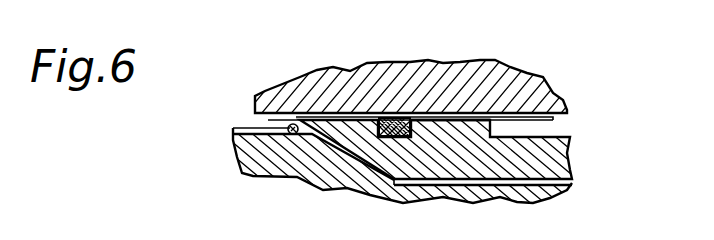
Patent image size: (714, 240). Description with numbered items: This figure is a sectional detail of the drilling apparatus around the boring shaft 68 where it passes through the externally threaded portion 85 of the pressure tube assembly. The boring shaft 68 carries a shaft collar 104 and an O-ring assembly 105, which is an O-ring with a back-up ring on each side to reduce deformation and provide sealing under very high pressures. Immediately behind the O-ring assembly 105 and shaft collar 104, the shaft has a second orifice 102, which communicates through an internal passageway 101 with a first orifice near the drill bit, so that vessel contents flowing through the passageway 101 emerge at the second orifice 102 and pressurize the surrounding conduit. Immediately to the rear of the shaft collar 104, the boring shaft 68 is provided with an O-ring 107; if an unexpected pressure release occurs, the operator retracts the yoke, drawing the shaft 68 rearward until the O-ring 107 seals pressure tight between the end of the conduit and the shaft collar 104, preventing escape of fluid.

The externally threaded portion 85 is at (507, 73).
The boring shaft 68 is at (553, 143).
The passageway 101 is at (563, 185).
The second orifice 102 is at (300, 120).
The shaft collar 104 is at (442, 125).
The O-ring assembly 105 is at (394, 117).
The O-ring 107 is at (232, 132).